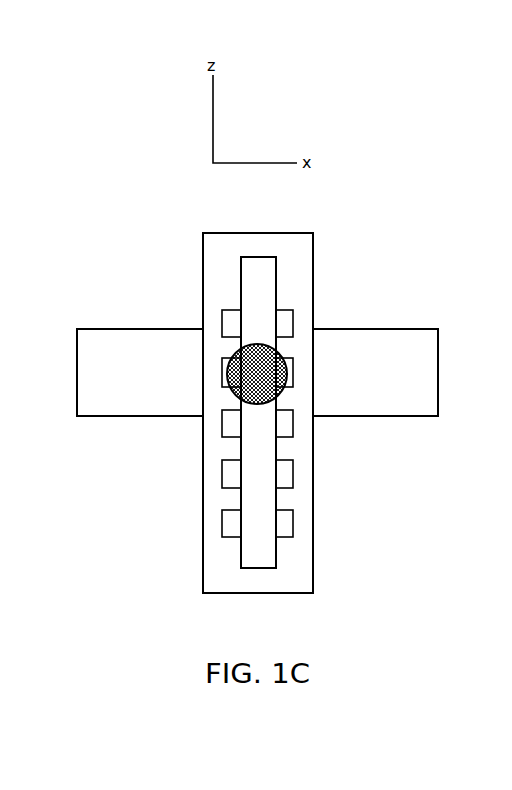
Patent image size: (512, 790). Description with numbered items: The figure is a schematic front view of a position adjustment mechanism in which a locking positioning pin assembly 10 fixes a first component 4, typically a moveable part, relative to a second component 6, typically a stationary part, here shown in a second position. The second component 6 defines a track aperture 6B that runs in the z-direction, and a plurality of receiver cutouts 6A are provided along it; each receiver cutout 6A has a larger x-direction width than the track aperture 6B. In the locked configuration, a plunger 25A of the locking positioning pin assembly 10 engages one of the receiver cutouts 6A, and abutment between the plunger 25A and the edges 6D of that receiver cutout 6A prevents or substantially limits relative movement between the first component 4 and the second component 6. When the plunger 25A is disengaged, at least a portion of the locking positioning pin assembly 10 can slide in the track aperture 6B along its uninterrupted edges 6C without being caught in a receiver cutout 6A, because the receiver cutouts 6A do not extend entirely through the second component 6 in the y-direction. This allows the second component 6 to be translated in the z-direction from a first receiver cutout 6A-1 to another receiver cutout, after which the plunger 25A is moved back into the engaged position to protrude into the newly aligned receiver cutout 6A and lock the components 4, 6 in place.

The first component 4 is at (432, 368).
The second component 6 is at (220, 247).
The receiver cutout 6A is at (285, 472).
The first receiver cutout 6A-1 is at (285, 425).
The track aperture 6B is at (254, 546).
The uninterrupted edges 6C is at (275, 483).
The edges of receiver cutout 6D is at (231, 328).
The locking positioning pin assembly 10 is at (290, 372).
The plunger 25A is at (246, 372).